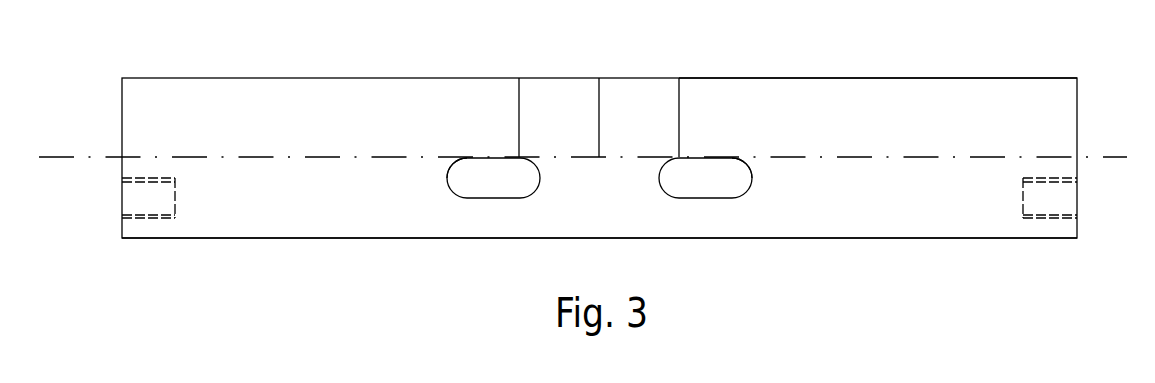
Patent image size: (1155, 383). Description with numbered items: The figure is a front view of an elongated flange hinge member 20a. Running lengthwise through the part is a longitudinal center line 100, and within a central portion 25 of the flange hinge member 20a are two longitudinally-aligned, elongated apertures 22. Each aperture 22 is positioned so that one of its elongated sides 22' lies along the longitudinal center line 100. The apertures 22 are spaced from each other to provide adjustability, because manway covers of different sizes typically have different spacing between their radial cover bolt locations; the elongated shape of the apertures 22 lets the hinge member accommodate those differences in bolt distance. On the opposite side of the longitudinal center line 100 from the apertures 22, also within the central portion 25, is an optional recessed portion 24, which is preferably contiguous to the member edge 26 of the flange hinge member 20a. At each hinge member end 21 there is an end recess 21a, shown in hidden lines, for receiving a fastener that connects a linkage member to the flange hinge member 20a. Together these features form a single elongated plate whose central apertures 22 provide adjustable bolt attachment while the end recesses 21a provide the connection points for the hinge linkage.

The longitudinal center line 100 is at (61, 157).
The hinge member end 21 is at (1077, 112).
The member edge 26 is at (788, 79).
The recessed portion 24 is at (565, 103).
The longitudinally-aligned apertures 22 is at (599, 192).
The elongated side 22' is at (585, 192).
The flange hinge member 20a is at (176, 248).
The end recess 21a is at (1047, 195).
The central portion 25 is at (543, 218).